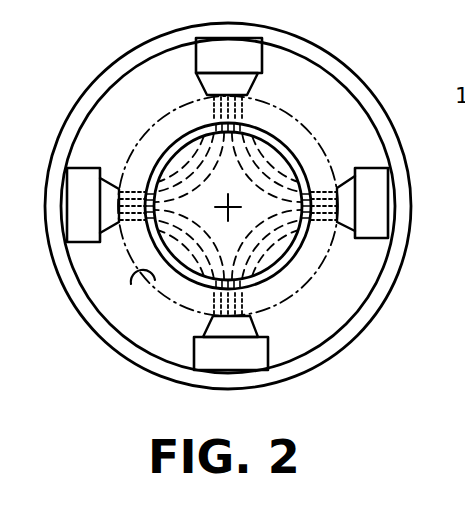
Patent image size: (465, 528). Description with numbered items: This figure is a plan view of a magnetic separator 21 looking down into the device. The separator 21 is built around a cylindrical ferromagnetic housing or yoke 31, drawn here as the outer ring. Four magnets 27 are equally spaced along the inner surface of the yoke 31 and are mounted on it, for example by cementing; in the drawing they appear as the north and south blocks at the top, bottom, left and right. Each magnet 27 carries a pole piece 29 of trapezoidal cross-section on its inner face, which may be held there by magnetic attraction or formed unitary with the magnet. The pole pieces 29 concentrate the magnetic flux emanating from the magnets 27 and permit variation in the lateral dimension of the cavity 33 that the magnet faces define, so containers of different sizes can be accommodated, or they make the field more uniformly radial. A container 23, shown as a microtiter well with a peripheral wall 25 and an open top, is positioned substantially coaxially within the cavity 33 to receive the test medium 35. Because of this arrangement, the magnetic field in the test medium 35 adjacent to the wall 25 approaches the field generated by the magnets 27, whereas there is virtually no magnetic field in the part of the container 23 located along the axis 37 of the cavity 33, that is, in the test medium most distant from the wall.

The magnetic separator 21 is at (82, 80).
The container 23 is at (266, 136).
The peripheral wall 25 is at (300, 152).
The magnets 27 is at (262, 68).
The pole pieces 29 is at (205, 88).
The ferromagnetic housing or yoke 31 is at (343, 60).
The cavity 33 is at (131, 284).
The test medium 35 is at (208, 198).
The axis 37 is at (234, 208).